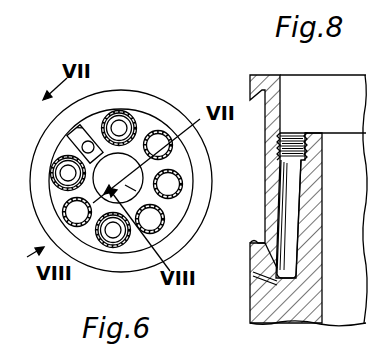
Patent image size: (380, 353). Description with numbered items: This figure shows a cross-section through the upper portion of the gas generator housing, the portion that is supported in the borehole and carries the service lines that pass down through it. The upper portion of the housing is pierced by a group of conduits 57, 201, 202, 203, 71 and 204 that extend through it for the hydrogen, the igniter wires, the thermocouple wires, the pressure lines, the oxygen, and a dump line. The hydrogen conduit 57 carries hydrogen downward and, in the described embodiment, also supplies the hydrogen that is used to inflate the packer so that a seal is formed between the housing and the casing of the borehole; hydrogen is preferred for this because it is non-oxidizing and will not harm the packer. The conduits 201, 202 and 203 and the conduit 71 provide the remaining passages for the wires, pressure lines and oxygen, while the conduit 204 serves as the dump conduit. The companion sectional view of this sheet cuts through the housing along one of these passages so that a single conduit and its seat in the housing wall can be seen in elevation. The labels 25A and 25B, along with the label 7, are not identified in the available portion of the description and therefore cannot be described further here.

In FIG. 6, the hydrogen conduit 57 is at (120, 128).
In FIG. 6, the conduit 71 is at (113, 231).
In FIG. 6, the bearing 7 is at (67, 173).
In FIG. 6, the conduit 201 is at (158, 145).
In FIG. 6, the conduit 202 is at (168, 184).
In FIG. 6, the conduit 203 is at (150, 219).
In FIG. 6, the dump conduit 204 is at (77, 212).
In FIG. 8, the dump conduit 204 is at (289, 197).
In FIG. 6, the housing outer wall 25A is at (37, 69).
In FIG. 6, the housing inner wall 25B is at (35, 115).